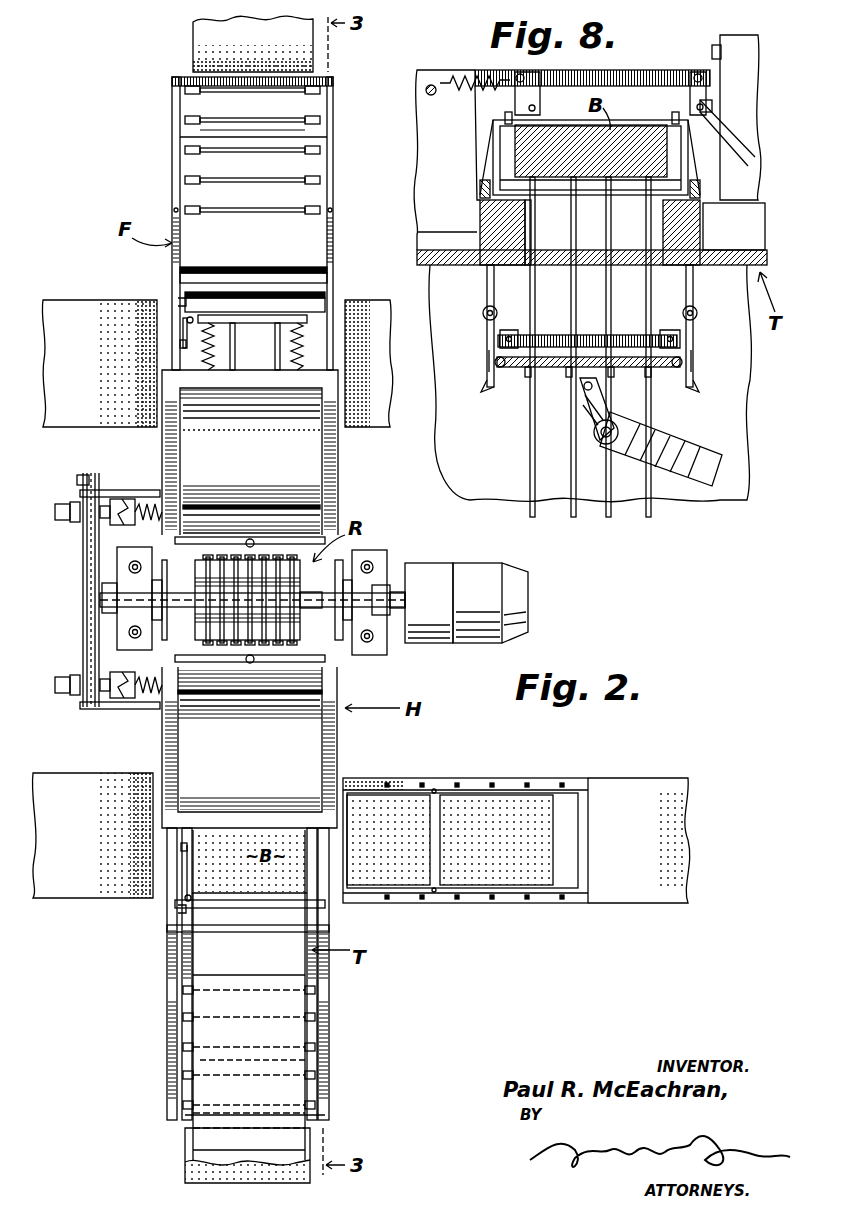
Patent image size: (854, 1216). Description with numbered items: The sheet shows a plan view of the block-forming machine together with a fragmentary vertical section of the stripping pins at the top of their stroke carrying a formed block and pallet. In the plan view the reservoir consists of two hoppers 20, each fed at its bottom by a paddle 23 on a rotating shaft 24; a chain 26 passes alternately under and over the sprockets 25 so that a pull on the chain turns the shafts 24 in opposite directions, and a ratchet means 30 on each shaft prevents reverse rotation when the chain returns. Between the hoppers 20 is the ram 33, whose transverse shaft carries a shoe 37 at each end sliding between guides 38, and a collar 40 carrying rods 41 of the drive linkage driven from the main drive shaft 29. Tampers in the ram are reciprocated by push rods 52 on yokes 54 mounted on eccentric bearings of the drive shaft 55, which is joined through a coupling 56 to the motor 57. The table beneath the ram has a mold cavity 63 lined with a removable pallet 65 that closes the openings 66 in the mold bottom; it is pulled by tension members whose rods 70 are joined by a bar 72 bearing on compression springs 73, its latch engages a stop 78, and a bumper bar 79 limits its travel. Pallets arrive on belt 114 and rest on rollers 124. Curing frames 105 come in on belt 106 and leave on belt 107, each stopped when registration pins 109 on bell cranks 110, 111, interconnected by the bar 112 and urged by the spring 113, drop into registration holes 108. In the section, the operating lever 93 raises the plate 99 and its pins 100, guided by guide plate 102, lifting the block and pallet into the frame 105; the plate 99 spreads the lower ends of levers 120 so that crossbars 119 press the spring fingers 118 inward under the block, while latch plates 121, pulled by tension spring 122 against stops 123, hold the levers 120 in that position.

In FIG. 2, the hopper 20 is at (300, 460).
In FIG. 2, the paddle 23 is at (240, 515).
In FIG. 2, the rotating shaft 24 is at (55, 512).
In FIG. 2, the sprocket 25 is at (85, 510).
In FIG. 2, the chain 26 is at (95, 632).
In FIG. 2, the drive shaft 29 is at (103, 598).
In FIG. 2, the ratchet means 30 is at (125, 500).
In FIG. 2, the ram 33 is at (320, 540).
In FIG. 2, the shoe 37 is at (165, 618).
In FIG. 2, the guide 38 is at (163, 565).
In FIG. 2, the collar 40 is at (418, 557).
In FIG. 2, the rod 41 is at (131, 563).
In FIG. 2, the push rod 52 is at (280, 560).
In FIG. 2, the yoke 54 is at (205, 560).
In FIG. 2, the drive shaft 55 is at (380, 620).
In FIG. 2, the coupling 56 is at (390, 595).
In FIG. 2, the motor 57 is at (495, 603).
In FIG. 8, the mold cavity 63 is at (515, 230).
In FIG. 2, the pallet 65 is at (200, 955).
In FIG. 8, the pallet 65 is at (630, 185).
In FIG. 8, the opening 66 is at (603, 265).
In FIG. 2, the rod 70 is at (275, 352).
In FIG. 2, the bar 72 is at (252, 315).
In FIG. 2, the compression spring 73 is at (200, 338).
In FIG. 2, the stop 78 is at (215, 130).
In FIG. 2, the bumper bar 79 is at (182, 78).
In FIG. 8, the operating lever 93 is at (715, 470).
In FIG. 8, the plate 99 is at (522, 368).
In FIG. 8, the pin 100 is at (570, 445).
In FIG. 8, the guide plate 102 is at (627, 335).
In FIG. 2, the curing frame 105 is at (568, 792).
In FIG. 2, the belt 106 is at (94, 599).
In FIG. 8, the belt 106 is at (493, 135).
In FIG. 2, the belt 107 is at (375, 355).
In FIG. 2, the registration hole 108 is at (436, 790).
In FIG. 2, the registration pin 109 is at (192, 316).
In FIG. 8, the registration pin 109 is at (505, 120).
In FIG. 2, the bell crank 110 is at (185, 328).
In FIG. 8, the bell crank 110 is at (515, 100).
In FIG. 8, the bell crank 111 is at (735, 120).
In FIG. 2, the bar 112 is at (182, 345).
In FIG. 8, the bar 112 is at (645, 73).
In FIG. 2, the spring 113 is at (180, 300).
In FIG. 8, the spring 113 is at (478, 76).
In FIG. 2, the material block 114 is at (193, 40).
In FIG. 8, the spring finger 118 is at (482, 200).
In FIG. 2, the crossbar 119 is at (300, 296).
In FIG. 8, the crossbar 119 is at (480, 186).
In FIG. 8, the lever 120 is at (487, 288).
In FIG. 8, the latch plate 121 is at (490, 365).
In FIG. 8, the tension spring 122 is at (625, 382).
In FIG. 8, the stop 123 is at (500, 332).
In FIG. 2, the roller 124 is at (200, 95).